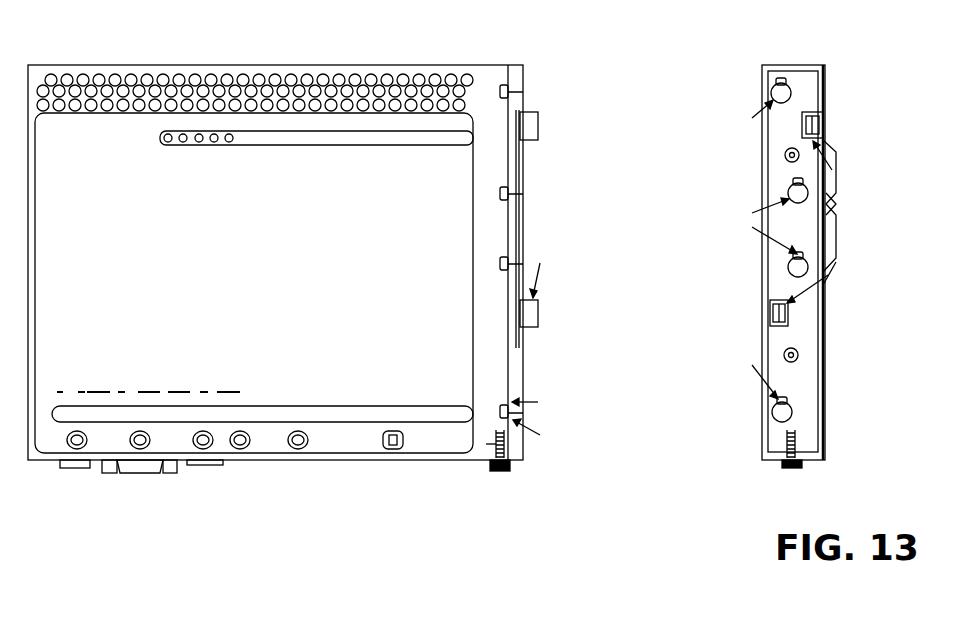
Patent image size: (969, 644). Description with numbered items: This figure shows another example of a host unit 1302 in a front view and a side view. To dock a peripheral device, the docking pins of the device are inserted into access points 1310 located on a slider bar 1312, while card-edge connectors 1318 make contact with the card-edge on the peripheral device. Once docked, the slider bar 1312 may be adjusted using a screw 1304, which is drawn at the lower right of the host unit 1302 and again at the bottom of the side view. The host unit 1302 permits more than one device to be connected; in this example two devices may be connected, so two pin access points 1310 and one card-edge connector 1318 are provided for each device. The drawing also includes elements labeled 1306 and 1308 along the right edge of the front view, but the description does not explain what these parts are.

The host unit 1302 is at (284, 314).
The screw 1304 is at (492, 476).
The mounting rail 1306 is at (567, 229).
The mounting block 1308 is at (578, 215).
The access points 1310 is at (717, 238).
The slider bar 1312 is at (466, 56).
The card-edge connectors 1318 is at (844, 211).